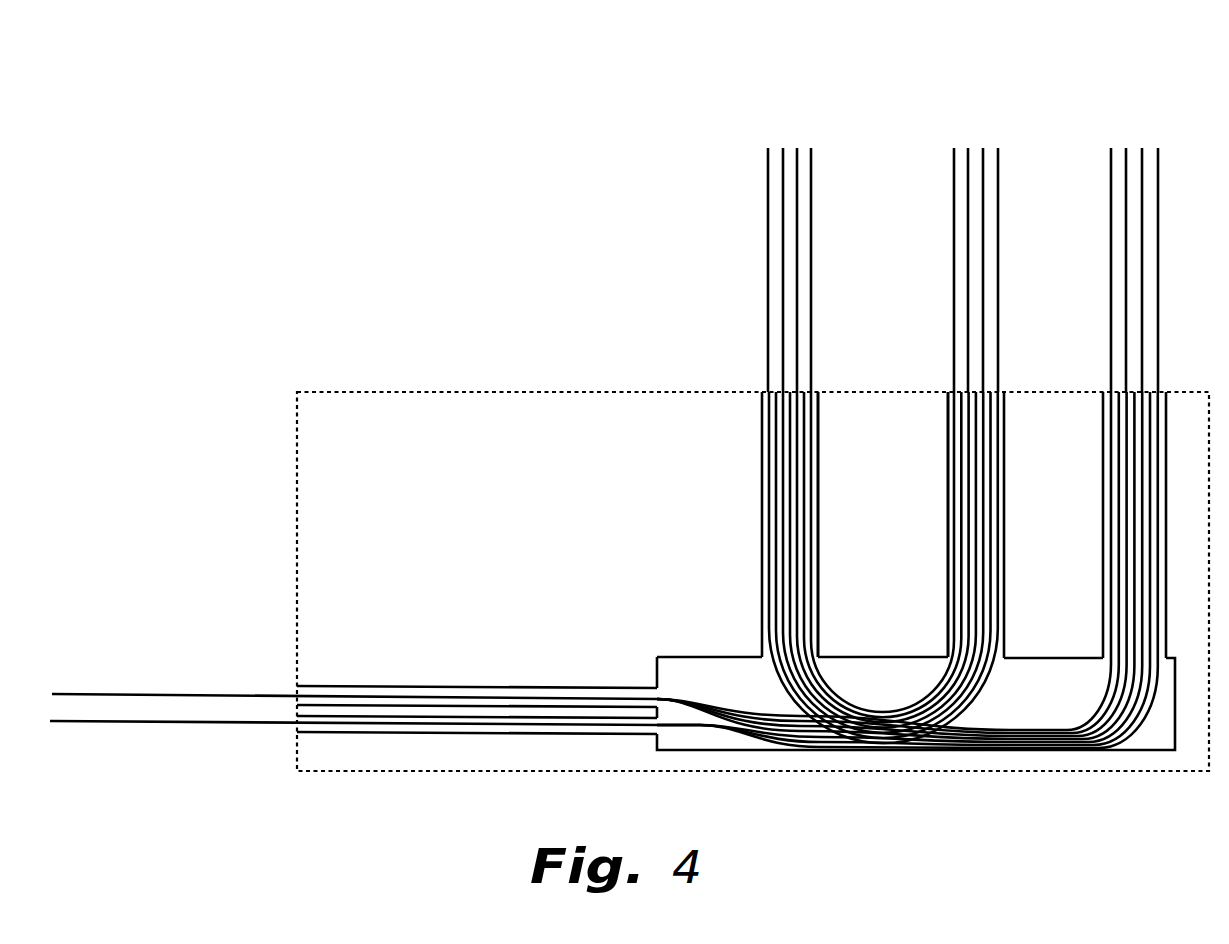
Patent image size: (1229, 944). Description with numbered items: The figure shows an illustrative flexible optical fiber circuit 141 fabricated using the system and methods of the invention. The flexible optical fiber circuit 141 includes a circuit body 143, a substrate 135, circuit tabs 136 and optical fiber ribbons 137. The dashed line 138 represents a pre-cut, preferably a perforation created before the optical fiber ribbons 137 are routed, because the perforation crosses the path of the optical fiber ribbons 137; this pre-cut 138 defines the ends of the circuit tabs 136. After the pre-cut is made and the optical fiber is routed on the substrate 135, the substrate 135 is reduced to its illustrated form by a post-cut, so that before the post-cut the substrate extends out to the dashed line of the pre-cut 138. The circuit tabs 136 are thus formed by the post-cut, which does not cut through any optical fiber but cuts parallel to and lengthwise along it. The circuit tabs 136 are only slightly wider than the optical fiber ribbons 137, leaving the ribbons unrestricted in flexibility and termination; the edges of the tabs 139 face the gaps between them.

The flexible optical fiber circuit 141 is at (862, 158).
The circuit body 143 is at (832, 753).
The circuit tabs 136 is at (757, 556).
The tab edges 139 is at (945, 488).
The optical fiber ribbons 137 is at (762, 282).
The dashed line of the pre-cut 138 is at (357, 388).
The substrate 135 is at (698, 688).